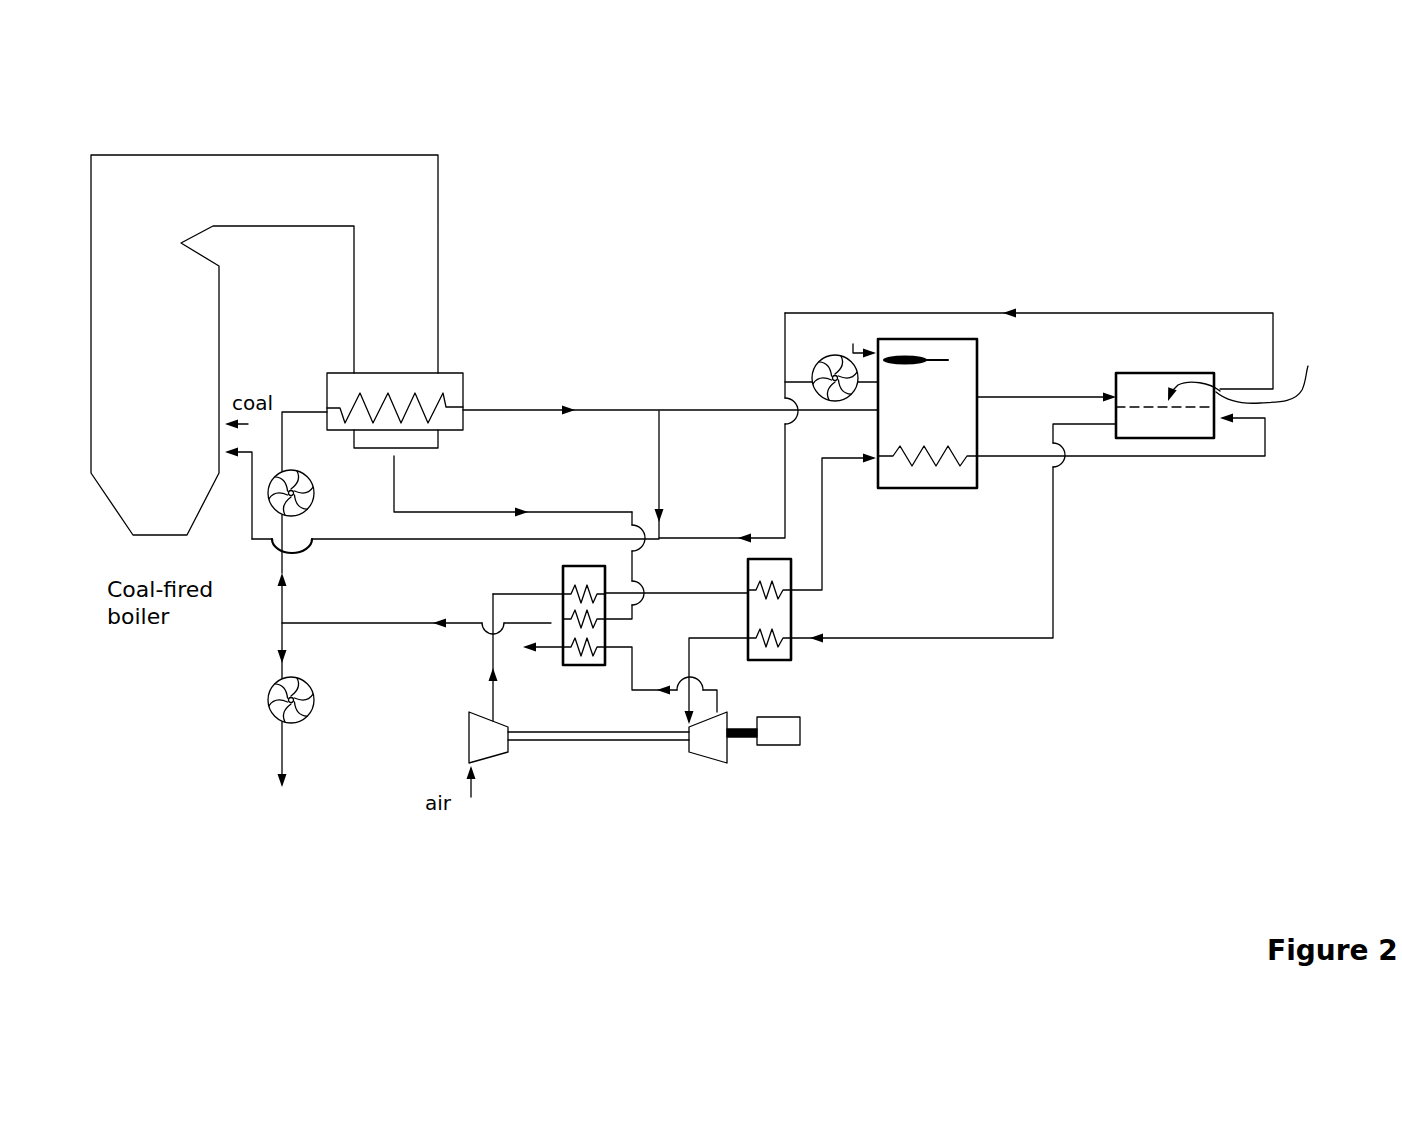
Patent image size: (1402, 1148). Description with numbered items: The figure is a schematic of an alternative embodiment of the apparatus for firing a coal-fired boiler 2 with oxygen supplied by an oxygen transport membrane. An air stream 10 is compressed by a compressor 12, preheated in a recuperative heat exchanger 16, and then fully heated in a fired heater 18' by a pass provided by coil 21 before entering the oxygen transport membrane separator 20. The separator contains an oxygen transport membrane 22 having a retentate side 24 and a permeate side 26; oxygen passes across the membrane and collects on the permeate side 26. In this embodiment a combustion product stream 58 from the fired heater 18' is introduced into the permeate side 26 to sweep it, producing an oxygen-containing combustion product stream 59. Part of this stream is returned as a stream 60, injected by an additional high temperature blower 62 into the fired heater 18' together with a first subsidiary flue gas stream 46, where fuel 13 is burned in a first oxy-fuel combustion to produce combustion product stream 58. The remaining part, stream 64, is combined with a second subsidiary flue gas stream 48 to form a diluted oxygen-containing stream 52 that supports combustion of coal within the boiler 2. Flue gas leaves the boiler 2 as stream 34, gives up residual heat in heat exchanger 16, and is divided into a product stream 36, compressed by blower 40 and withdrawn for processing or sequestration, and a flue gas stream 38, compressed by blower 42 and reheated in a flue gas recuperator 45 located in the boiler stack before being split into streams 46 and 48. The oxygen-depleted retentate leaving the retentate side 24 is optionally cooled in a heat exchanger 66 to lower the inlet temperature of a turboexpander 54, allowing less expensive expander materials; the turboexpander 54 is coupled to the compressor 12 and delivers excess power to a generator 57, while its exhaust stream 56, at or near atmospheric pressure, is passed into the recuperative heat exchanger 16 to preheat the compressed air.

The boiler 2 is at (155, 150).
The flue gas recuperator 45 is at (452, 368).
The flue gas stream 38 is at (297, 412).
The blower 42 is at (314, 494).
The stream 34 is at (490, 508).
The diluted oxygen-containing stream 52 is at (408, 541).
The second subsidiary flue gas stream 48 is at (658, 440).
The stream 64 is at (783, 510).
The first subsidiary flue gas stream 46 is at (727, 410).
The stream 60 is at (800, 381).
The high temperature blower 62 is at (830, 355).
The fuel 13 is at (853, 340).
The oxygen-containing combustion product stream 59 is at (883, 310).
The fired heater 18' is at (927, 444).
The coil 21 is at (940, 463).
The combustion product stream 58 is at (1035, 395).
The oxygen transport membrane separator 20 is at (1148, 365).
The permeate side 26 is at (1133, 393).
The oxygen transport membrane 22 is at (1278, 378).
The retentate side 24 is at (1162, 422).
The heat exchanger 66 is at (760, 620).
The recuperative heat exchanger 16 is at (575, 667).
The exhaust stream 56 is at (718, 703).
The compressor 12 is at (492, 735).
The turboexpander 54 is at (703, 730).
The generator 57 is at (787, 747).
The air stream 10 is at (468, 790).
The blower 40 is at (270, 708).
The product stream 36 is at (280, 752).